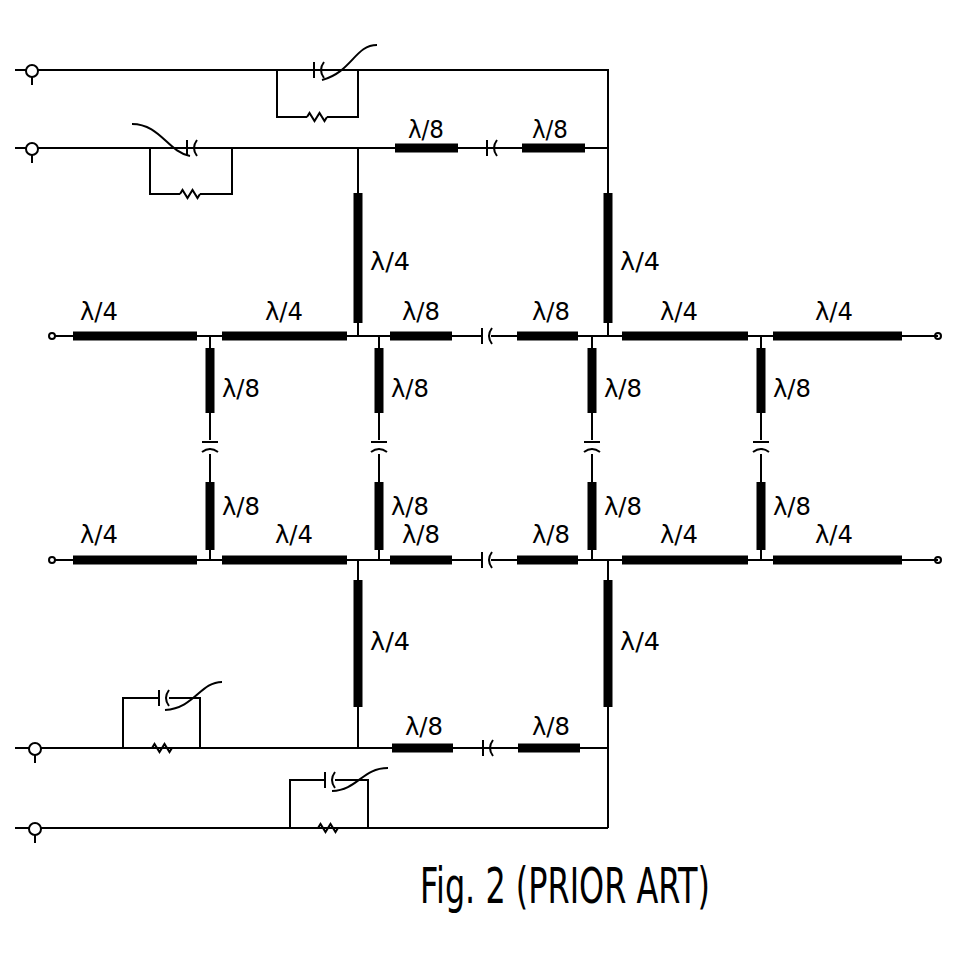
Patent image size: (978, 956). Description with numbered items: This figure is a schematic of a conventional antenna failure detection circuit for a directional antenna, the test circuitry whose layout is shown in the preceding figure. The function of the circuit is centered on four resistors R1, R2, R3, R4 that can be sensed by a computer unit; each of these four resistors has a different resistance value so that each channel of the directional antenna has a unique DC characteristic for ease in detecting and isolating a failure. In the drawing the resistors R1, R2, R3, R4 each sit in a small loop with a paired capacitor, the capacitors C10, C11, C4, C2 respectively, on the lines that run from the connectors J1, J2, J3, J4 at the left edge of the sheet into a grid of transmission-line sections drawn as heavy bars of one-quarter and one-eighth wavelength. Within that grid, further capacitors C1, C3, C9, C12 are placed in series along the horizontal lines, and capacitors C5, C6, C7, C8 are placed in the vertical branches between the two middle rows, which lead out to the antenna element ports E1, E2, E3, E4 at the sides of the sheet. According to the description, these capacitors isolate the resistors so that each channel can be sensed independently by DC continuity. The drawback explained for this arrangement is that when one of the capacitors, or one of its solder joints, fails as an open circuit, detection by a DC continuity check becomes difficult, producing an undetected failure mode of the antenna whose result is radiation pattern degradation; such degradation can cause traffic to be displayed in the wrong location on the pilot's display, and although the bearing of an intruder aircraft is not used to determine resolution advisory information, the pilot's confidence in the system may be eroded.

The input connector J1 is at (42, 740).
The input connector J2 is at (42, 818).
The input connector J3 is at (40, 62).
The input connector J4 is at (40, 137).
The output port E1 is at (50, 541).
The output port E2 is at (936, 541).
The output port E3 is at (936, 318).
The output port E4 is at (50, 318).
The capacitor C1 150 pF C1 is at (490, 147).
The capacitor C2 150 pF C2 is at (149, 131).
The capacitor C3 150 pF C3 is at (486, 332).
The capacitor C4 150 pF C4 is at (357, 56).
The capacitor C5 150 pF C5 is at (244, 448).
The capacitor C6 150 pF C6 is at (413, 448).
The capacitor C7 150 pF C7 is at (626, 448).
The capacitor C8 150 pF C8 is at (795, 448).
The capacitor C9 150 pF C9 is at (486, 554).
The capacitor C10 150 pF C10 is at (202, 685).
The capacitor C11 150 pF C11 is at (359, 770).
The capacitor C12 150 pF C12 is at (485, 745).
The resistor R1 1K R1 is at (161, 740).
The resistor R2 8.06K R2 is at (329, 819).
The resistor R3 4.02K R3 is at (317, 109).
The resistor R4 2K R4 is at (191, 189).